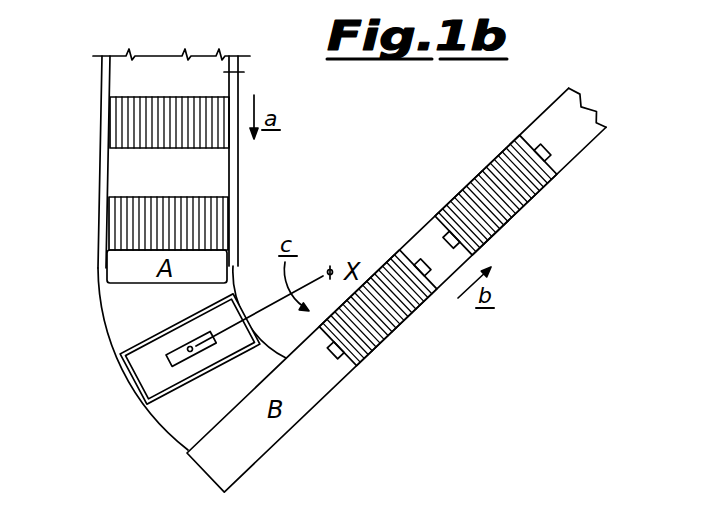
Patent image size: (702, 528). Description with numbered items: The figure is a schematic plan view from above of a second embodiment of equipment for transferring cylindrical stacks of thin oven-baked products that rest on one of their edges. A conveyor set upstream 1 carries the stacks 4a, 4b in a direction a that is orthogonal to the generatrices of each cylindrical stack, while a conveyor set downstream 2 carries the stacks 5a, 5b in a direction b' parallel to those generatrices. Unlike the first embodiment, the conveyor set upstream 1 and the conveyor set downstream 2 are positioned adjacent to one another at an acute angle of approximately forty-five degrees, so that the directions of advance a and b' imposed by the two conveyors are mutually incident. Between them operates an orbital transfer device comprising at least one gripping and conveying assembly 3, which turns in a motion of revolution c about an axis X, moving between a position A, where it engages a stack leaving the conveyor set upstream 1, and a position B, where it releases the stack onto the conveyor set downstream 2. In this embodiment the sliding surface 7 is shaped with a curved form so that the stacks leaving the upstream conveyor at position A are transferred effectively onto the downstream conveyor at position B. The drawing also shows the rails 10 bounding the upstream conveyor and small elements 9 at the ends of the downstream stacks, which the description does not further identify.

The conveyor set upstream 1 is at (244, 72).
The conveyor set downstream 2 is at (244, 472).
The gripping and conveying assembly 3 is at (134, 367).
The stack 4a is at (118, 125).
The stack 4b is at (226, 213).
The stack 5a is at (390, 334).
The stack 5b is at (480, 193).
The sliding surface 7 is at (172, 422).
The retaining element / clamp 9 is at (548, 148).
The guide rail 10 is at (102, 74).